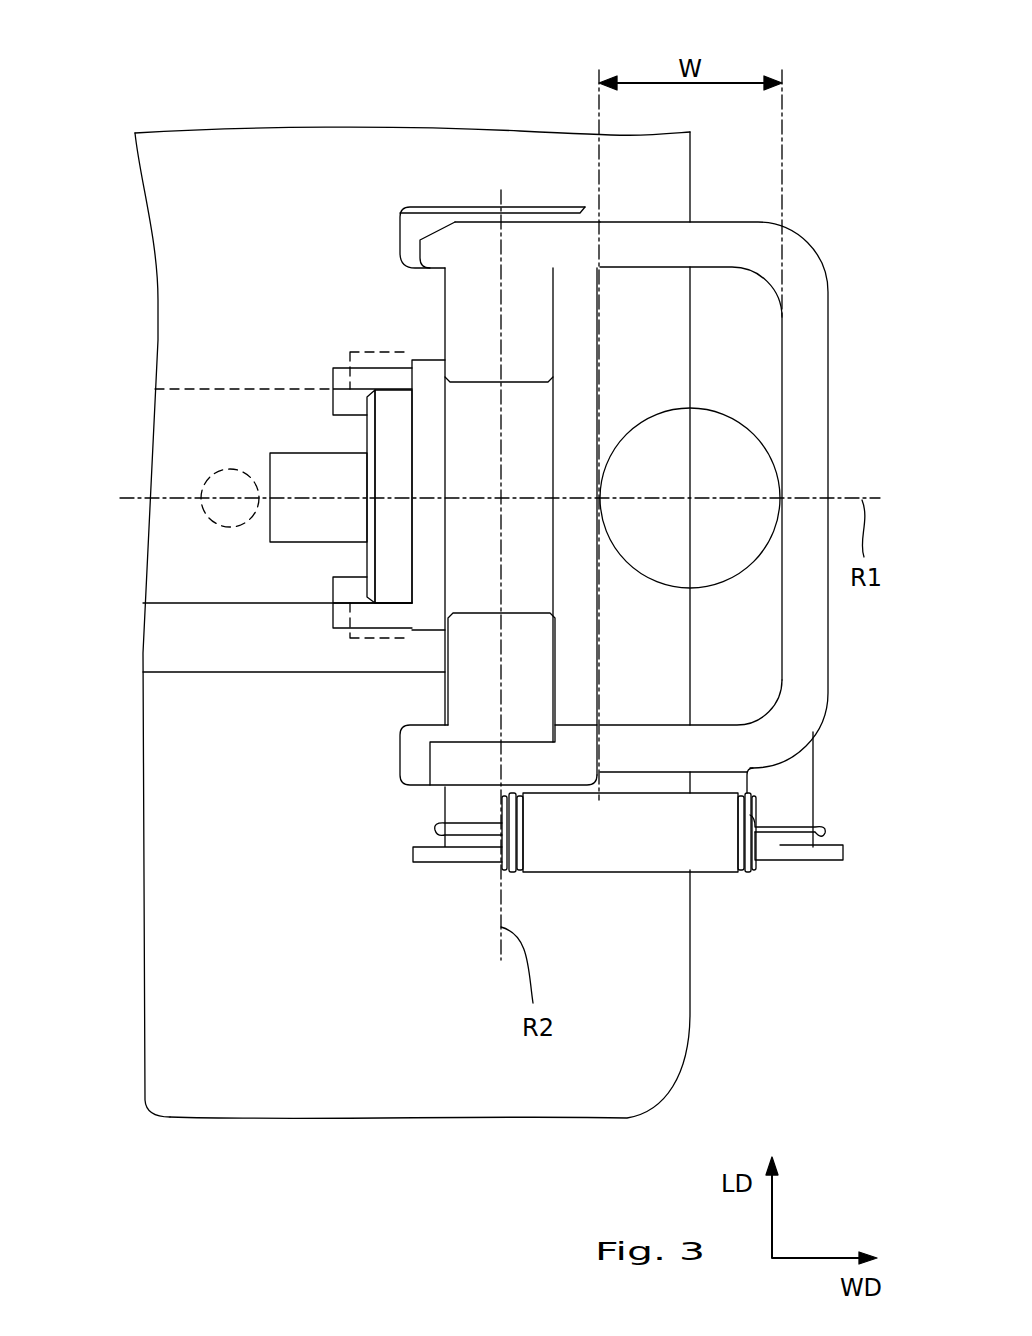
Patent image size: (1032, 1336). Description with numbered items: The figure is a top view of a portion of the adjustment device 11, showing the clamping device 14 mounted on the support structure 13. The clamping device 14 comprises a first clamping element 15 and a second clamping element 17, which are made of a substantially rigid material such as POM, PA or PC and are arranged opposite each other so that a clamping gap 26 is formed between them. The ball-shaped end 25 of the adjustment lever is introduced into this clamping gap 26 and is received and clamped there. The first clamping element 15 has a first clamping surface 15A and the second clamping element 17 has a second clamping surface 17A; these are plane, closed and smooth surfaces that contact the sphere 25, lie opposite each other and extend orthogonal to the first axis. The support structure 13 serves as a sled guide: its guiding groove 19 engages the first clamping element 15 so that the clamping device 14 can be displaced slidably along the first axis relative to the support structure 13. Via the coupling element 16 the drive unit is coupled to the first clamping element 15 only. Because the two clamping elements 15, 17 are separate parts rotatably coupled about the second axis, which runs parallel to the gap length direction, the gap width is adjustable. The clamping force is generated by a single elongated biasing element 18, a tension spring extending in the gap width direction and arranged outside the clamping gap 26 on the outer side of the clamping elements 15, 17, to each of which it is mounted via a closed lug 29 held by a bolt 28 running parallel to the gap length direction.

The adjustment device 11 is at (142, 84).
The support structure 13 is at (364, 160).
The clamping device 14 is at (641, 898).
The first clamping element 15 is at (443, 765).
The first clamping surface 15A is at (600, 646).
The coupling element 16 is at (297, 468).
The second clamping element 17 is at (802, 280).
The second clamping surface 17A is at (768, 398).
The biasing element 18 is at (718, 848).
The guiding groove 19 is at (154, 642).
The ball-shaped end 25 is at (742, 462).
The clamping gap 26 is at (664, 288).
The bolt 28 is at (455, 806).
The closed lug 29 is at (467, 828).